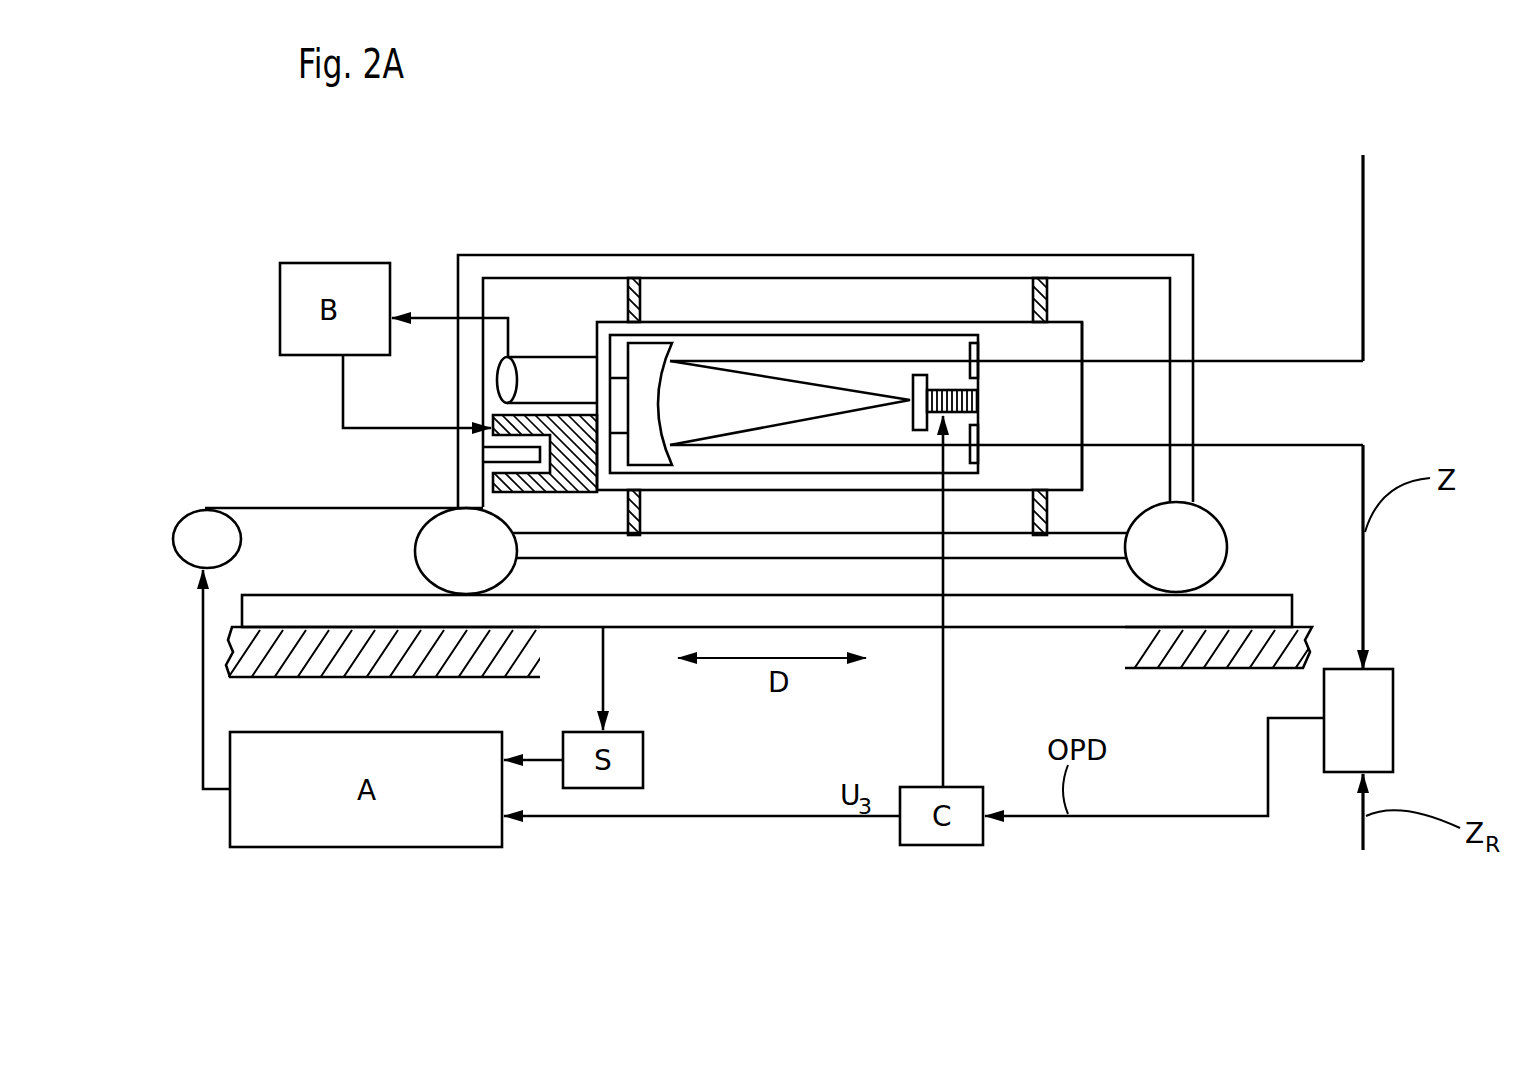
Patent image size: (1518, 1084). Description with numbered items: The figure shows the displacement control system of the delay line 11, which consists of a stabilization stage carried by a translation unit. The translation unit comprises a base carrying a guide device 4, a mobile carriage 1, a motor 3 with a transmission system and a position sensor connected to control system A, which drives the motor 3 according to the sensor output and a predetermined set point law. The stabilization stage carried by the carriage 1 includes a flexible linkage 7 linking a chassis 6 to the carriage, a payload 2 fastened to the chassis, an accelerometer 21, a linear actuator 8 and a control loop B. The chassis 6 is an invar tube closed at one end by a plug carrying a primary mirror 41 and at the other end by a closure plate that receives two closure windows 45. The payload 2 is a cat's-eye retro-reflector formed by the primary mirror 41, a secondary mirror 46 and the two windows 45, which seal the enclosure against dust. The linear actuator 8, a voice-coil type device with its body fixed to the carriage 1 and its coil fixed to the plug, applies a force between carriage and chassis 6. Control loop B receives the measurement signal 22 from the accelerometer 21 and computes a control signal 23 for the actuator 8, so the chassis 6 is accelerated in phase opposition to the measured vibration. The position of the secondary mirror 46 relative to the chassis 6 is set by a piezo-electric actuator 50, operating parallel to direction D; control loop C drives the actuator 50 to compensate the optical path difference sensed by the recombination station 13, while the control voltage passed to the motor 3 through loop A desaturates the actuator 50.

The mobile carriage 1 is at (455, 452).
The payload 2 is at (787, 343).
The motor 3 is at (190, 521).
The guide device 4 is at (1048, 608).
The chassis 6 is at (1061, 322).
The flexible linkage 7 is at (1030, 299).
The linear actuator 8 is at (569, 434).
The delay line 11 is at (1204, 136).
The recombination station 13 is at (1369, 712).
The accelerometer 21 is at (542, 361).
The measurement signal 22 is at (427, 316).
The control signal 23 is at (343, 393).
The primary mirror 41 is at (675, 352).
The closure windows 45 is at (969, 346).
The secondary mirror 46 is at (930, 382).
The piezo-electric actuator 50 is at (958, 414).